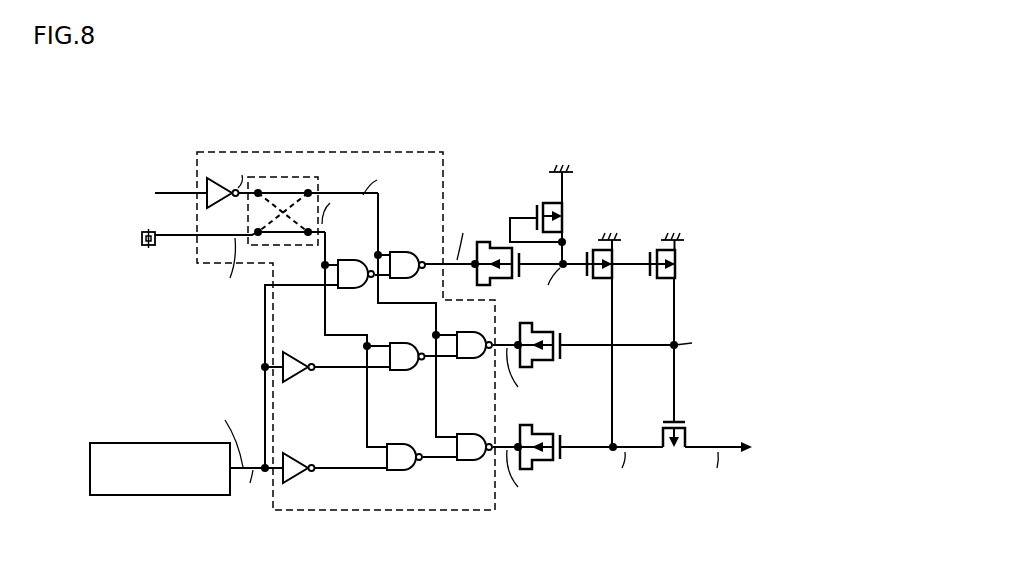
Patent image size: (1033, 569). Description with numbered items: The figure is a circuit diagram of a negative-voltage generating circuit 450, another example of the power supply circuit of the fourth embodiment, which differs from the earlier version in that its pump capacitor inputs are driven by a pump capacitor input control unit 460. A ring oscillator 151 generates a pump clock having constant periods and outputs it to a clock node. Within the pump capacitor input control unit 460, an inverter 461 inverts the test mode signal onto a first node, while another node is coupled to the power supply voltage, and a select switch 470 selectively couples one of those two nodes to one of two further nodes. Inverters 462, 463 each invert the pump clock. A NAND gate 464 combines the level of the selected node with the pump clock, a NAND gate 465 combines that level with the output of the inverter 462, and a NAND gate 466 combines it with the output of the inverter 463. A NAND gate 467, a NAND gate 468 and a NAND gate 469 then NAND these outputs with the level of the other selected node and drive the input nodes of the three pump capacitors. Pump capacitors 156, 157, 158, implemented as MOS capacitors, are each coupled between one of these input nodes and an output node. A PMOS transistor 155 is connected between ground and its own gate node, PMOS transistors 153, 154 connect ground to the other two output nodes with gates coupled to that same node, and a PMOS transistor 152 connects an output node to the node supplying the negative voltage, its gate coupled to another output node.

The ring oscillator 151 is at (178, 496).
The PMOS transistor 152 is at (687, 432).
The PMOS transistor 153 is at (611, 280).
The PMOS transistor 154 is at (673, 268).
The PMOS transistor 155 is at (566, 205).
The pump capacitor 156 is at (538, 431).
The pump capacitor 157 is at (538, 329).
The pump capacitor 158 is at (488, 232).
The negative-voltage generating circuit 450 is at (730, 125).
The pump capacitor input control unit 460 is at (413, 151).
The inverter 461 is at (213, 172).
The inverter 462 is at (297, 377).
The inverter 463 is at (300, 480).
The NAND gate 464 is at (350, 292).
The NAND gate 465 is at (400, 372).
The NAND gate 466 is at (397, 472).
The NAND gate 467 is at (407, 250).
The NAND gate 468 is at (465, 360).
The NAND gate 469 is at (470, 462).
The select switch 470 is at (302, 175).